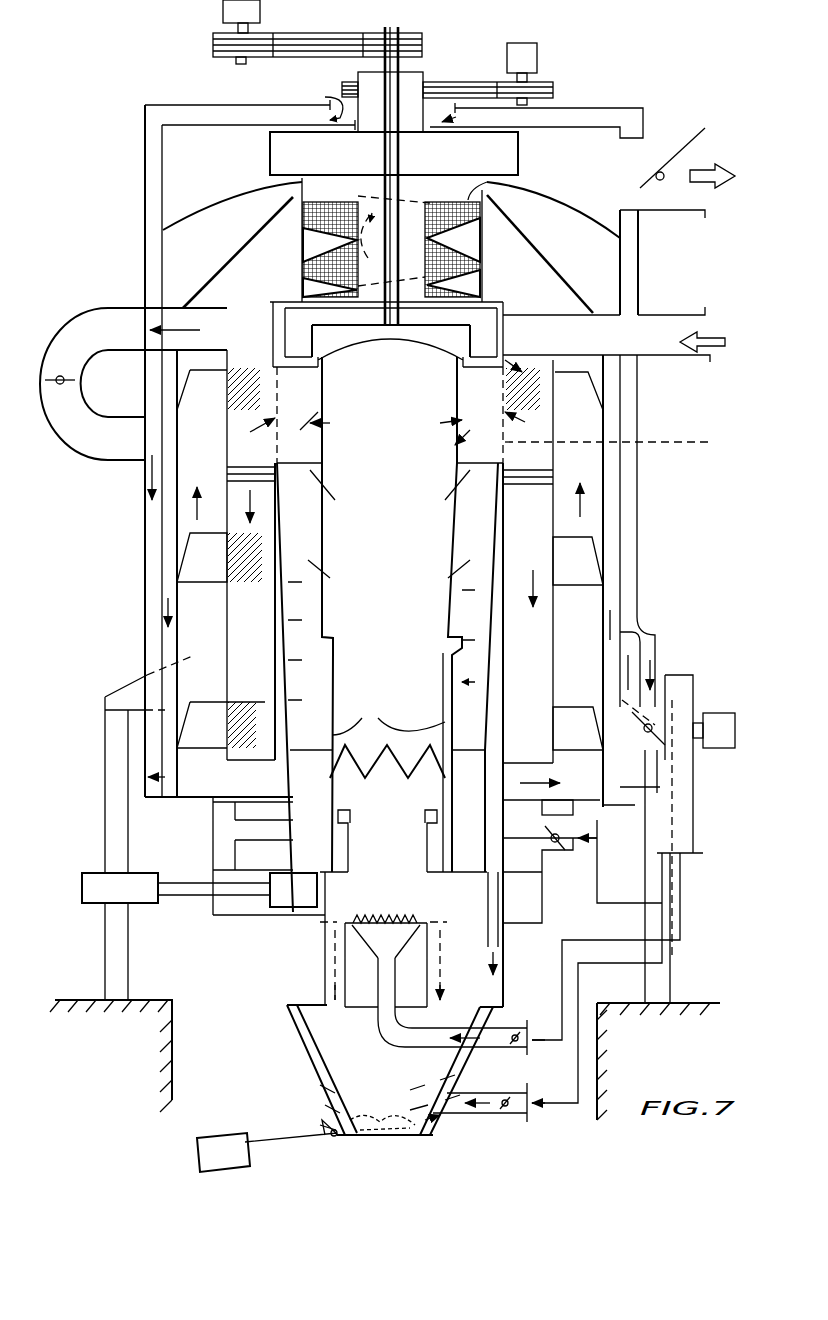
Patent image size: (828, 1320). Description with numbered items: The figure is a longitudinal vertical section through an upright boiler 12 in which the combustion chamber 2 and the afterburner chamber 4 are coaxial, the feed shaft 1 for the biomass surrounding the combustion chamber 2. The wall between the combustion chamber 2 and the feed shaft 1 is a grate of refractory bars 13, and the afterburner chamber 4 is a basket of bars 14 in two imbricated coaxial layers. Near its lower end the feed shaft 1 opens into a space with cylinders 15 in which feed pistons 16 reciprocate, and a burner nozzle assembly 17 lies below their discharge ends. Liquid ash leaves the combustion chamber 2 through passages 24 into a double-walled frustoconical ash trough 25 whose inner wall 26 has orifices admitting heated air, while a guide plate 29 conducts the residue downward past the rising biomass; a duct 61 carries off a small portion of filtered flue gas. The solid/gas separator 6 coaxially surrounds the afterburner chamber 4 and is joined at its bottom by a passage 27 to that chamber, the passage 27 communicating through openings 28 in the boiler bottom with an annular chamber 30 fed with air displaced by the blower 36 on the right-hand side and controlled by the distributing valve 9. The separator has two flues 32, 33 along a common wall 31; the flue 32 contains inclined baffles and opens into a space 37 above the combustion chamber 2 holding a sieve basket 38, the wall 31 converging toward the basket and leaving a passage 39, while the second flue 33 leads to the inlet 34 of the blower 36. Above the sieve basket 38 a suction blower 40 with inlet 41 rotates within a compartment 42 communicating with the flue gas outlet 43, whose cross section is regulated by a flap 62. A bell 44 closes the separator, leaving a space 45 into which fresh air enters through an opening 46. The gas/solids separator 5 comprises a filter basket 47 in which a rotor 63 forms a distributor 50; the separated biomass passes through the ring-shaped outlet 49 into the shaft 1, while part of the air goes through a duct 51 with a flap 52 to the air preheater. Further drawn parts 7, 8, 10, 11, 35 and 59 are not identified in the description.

The feed shaft 1 is at (306, 534).
The combustion chamber 2 is at (414, 639).
The afterburner chamber 4 is at (259, 677).
The gas/solids separator 5 is at (496, 296).
The solid/gas separator 6 is at (195, 670).
The damper flap 7 is at (655, 735).
The tapping pipe 8 is at (345, 1090).
The distributing valve 9 is at (570, 852).
The level line 10 is at (528, 425).
The frame 11 is at (648, 125).
The boiler 12 is at (140, 175).
The bars 13 is at (325, 515).
The bars or rods 14 is at (285, 412).
The cylinders 15 is at (310, 915).
The feed pistons 16 is at (280, 897).
The burner nozzle assembly 17 is at (398, 930).
The passages 24 is at (333, 983).
The ash trough 25 is at (370, 1041).
The inner wall 26 is at (312, 1040).
The passage 27 is at (235, 808).
The openings 28 is at (235, 845).
The guide plate 29 is at (180, 800).
The annular chamber 30 is at (538, 880).
The common wall 31 is at (170, 508).
The flue 32 is at (210, 636).
The second flue 33 is at (170, 583).
The inlet 34 is at (650, 725).
The baffle 35 is at (195, 552).
The blower 36 is at (706, 688).
The space 37 is at (549, 273).
The sieve basket 38 is at (472, 250).
The passage 39 is at (294, 200).
The suction blower 40 is at (285, 142).
The inlet 41 is at (476, 200).
The compartment 42 is at (606, 189).
The flue gas outlet 43 is at (720, 160).
The bell 44 is at (640, 300).
The space 45 is at (158, 215).
The opening 46 is at (432, 105).
The filter basket 47 is at (278, 318).
The outlet 49 is at (270, 365).
The distributor 50 is at (485, 335).
The duct 51 is at (118, 318).
The flap 52 is at (60, 375).
The melt 59 is at (387, 736).
The duct 61 is at (488, 898).
The flap 62 is at (658, 172).
The rotor 63 is at (300, 24).